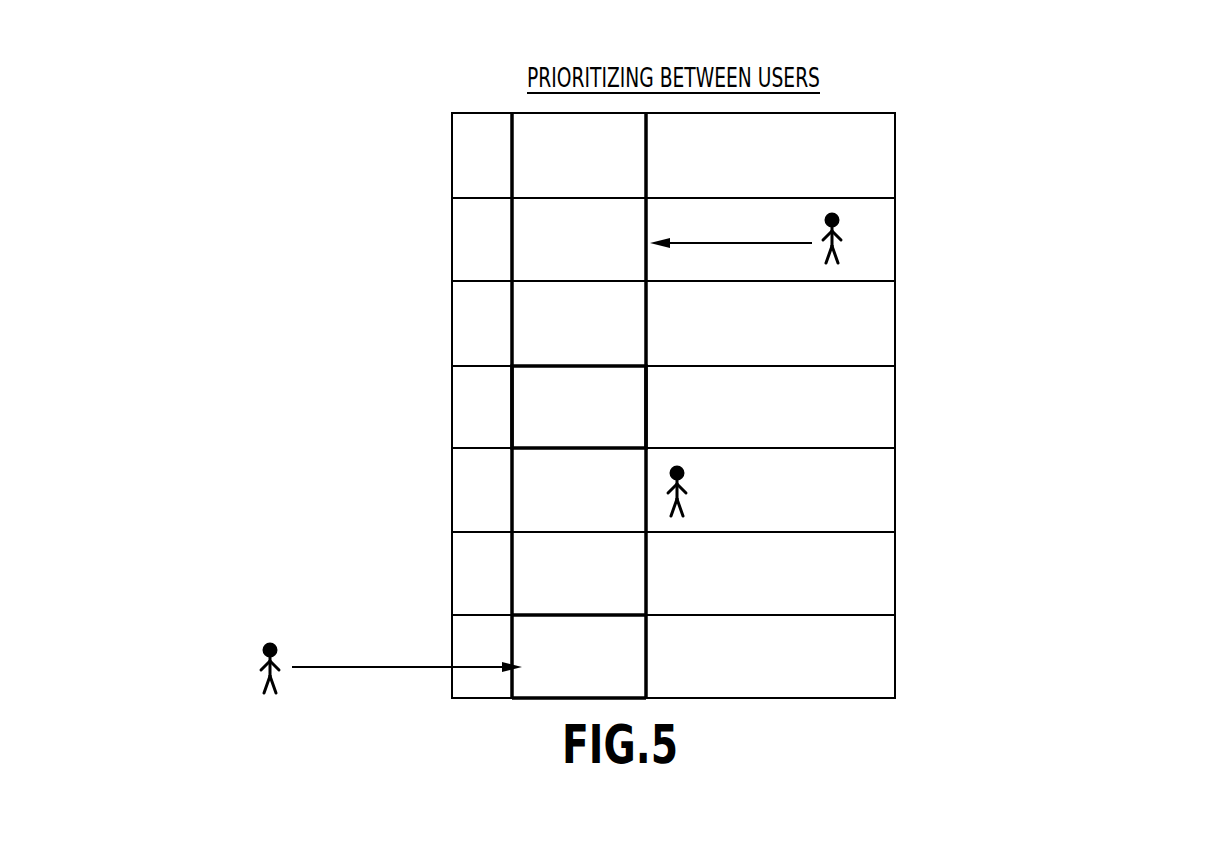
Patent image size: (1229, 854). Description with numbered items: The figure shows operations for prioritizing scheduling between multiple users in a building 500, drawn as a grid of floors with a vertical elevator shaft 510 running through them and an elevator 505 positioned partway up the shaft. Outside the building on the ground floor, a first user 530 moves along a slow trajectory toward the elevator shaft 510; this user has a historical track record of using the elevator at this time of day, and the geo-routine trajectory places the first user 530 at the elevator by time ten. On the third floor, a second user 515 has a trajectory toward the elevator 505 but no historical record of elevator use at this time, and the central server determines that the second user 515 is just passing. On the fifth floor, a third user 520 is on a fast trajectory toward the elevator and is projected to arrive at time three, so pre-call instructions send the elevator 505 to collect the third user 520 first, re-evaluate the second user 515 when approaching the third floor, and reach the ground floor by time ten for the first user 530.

The building 500 is at (930, 94).
The elevator 505 is at (550, 372).
The elevator shaft 510 is at (538, 622).
The second user 515 is at (677, 462).
The third user 520 is at (848, 243).
The first user 530 is at (265, 643).